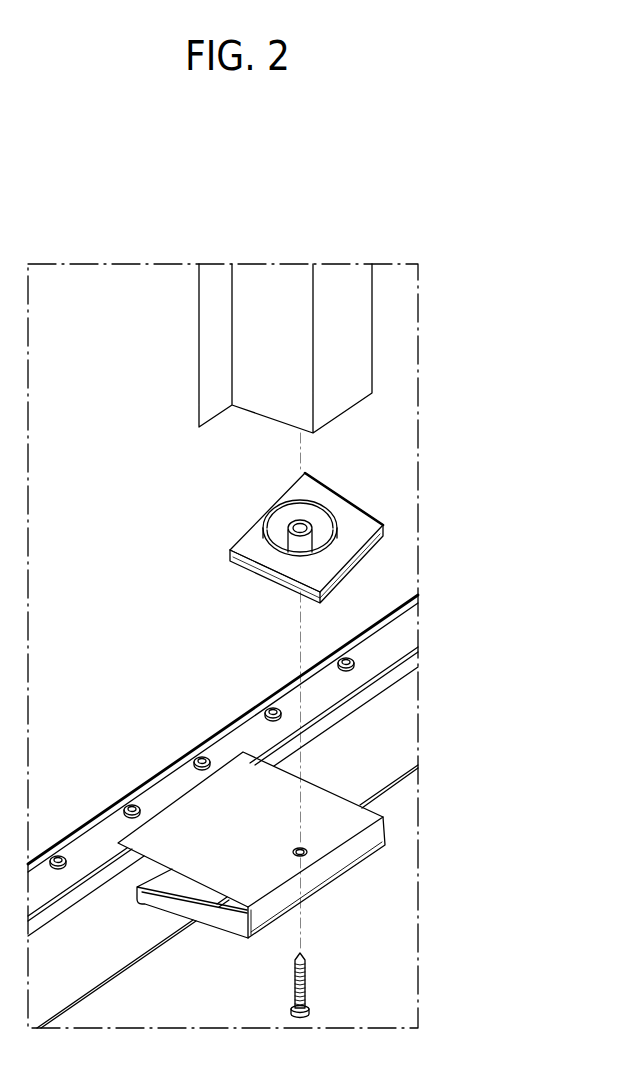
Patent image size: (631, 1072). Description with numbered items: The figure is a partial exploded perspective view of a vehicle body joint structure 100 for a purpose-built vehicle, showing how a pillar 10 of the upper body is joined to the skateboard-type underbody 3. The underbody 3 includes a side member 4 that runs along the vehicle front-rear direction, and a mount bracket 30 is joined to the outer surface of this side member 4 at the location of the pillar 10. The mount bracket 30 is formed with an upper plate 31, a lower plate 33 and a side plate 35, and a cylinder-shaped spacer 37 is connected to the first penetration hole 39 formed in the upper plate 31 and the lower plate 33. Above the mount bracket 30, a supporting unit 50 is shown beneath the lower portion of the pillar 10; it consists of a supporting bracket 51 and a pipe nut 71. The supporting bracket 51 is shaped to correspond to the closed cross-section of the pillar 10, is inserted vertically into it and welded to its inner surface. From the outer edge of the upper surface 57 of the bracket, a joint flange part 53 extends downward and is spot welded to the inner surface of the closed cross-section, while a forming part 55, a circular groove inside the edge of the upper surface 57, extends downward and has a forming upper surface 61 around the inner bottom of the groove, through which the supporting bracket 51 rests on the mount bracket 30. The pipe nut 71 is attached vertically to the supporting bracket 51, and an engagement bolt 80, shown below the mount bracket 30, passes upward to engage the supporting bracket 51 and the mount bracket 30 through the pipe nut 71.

The vehicle body joint structure 100 is at (120, 233).
The pillar 10 is at (392, 352).
The supporting unit 50 is at (322, 524).
The supporting bracket 51 is at (402, 525).
The joint flange part 53 is at (373, 547).
The forming part 55 is at (273, 508).
The upper surface of the bracket 57 is at (238, 550).
The forming upper surface 61 is at (278, 538).
The pipe nut 71 is at (320, 520).
The underbody 3 is at (436, 668).
The side member 4 is at (400, 717).
The mount bracket 30 is at (276, 866).
The upper plate 31 is at (192, 802).
The lower plate 33 is at (232, 920).
The side plate 35 is at (257, 920).
The spacer 37 is at (308, 850).
The first penetration hole 39 is at (305, 847).
The engagement bolt 80 is at (327, 985).